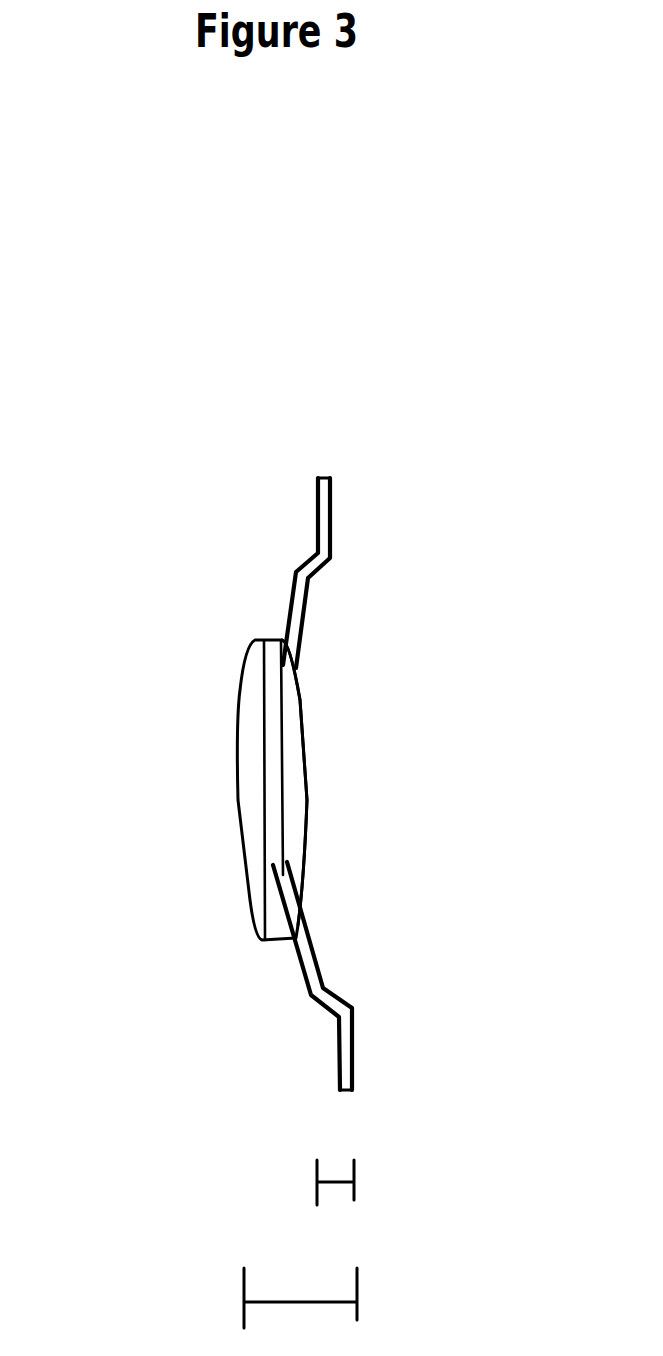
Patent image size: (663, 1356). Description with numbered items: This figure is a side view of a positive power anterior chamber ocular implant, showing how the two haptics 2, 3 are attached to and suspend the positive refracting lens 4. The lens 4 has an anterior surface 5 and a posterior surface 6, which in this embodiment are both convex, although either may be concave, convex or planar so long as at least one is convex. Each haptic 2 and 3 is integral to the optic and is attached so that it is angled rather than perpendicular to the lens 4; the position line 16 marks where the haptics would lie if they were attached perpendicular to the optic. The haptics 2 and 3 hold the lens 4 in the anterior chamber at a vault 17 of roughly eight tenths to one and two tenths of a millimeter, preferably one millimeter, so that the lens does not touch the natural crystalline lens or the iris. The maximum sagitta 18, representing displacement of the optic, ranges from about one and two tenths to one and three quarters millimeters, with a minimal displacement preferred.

The haptic 2 is at (412, 994).
The haptic 3 is at (378, 548).
The positive refracting lens 4 is at (192, 795).
The anterior surface 5 is at (262, 760).
The posterior surface 6 is at (332, 812).
The position line 16 is at (259, 612).
The vault 17 is at (378, 1181).
The maximum sagitta 18 is at (342, 1298).